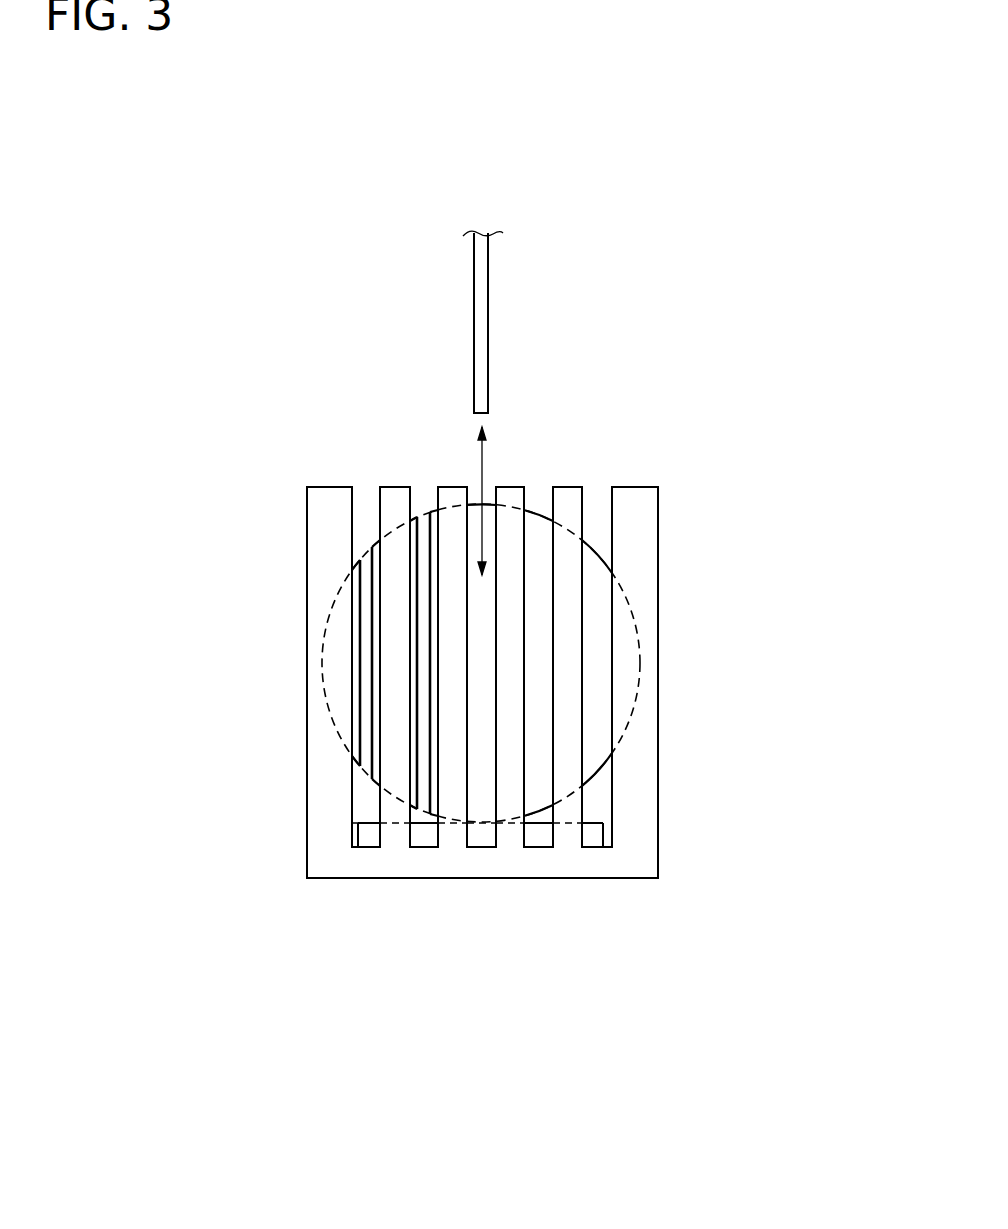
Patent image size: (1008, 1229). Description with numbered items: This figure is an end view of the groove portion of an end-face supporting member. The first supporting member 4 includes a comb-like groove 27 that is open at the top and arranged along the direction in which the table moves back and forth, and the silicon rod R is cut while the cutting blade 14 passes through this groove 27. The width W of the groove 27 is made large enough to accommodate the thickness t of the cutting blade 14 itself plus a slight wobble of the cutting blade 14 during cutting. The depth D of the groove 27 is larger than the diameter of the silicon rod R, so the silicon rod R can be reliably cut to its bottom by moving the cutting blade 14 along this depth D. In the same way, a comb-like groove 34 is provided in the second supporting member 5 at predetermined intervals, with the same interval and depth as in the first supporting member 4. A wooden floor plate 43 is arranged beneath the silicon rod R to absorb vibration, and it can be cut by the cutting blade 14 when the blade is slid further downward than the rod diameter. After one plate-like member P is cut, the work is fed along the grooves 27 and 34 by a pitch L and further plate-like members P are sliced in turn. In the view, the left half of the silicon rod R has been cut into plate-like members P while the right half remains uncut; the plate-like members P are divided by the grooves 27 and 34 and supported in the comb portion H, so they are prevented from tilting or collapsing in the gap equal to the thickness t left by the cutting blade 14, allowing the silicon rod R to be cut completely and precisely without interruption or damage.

The first supporting member 4 is at (390, 675).
The second supporting member 5 is at (293, 620).
The cutting blade 14 is at (488, 345).
The comb-like groove 27 is at (507, 582).
The comb-like groove 34 is at (417, 507).
The floor plate 43 is at (420, 835).
The comb portion H is at (398, 702).
The plate-like member P is at (323, 662).
The silicon rod R is at (600, 772).
The depth D is at (658, 487).
The pitch L is at (538, 837).
The width W is at (467, 878).
The thickness t is at (512, 282).